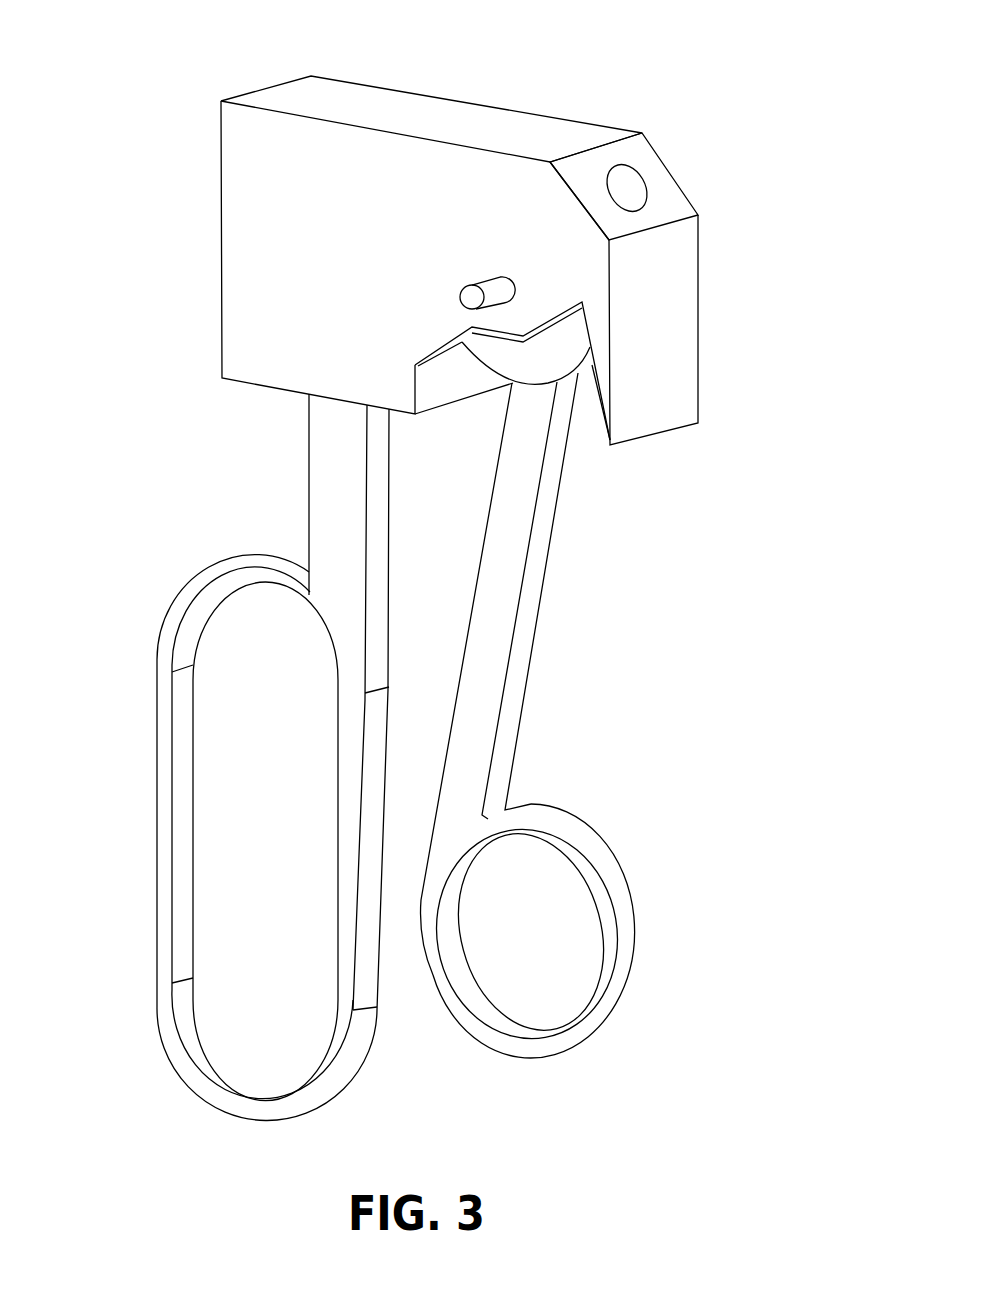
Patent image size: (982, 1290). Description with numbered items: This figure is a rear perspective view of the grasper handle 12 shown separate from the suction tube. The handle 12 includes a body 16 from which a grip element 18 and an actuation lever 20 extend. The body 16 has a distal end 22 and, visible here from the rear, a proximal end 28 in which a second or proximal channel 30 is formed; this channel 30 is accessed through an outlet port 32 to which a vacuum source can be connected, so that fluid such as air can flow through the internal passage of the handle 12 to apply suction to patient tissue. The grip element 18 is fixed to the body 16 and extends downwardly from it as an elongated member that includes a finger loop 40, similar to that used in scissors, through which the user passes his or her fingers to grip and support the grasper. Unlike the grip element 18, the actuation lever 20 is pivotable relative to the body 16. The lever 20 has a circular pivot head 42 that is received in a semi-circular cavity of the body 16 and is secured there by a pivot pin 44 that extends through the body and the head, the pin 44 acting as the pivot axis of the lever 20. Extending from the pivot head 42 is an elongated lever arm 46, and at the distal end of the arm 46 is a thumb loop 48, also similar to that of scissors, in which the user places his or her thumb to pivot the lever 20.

The handle 12 is at (766, 66).
The body 16 is at (435, 110).
The grip element 18 is at (99, 899).
The actuation lever 20 is at (588, 609).
The distal end 22 is at (185, 216).
The proximal end 28 is at (742, 364).
The proximal channel 30 is at (632, 193).
The outlet port 32 is at (656, 170).
The finger loop 40 is at (192, 1065).
The pivot head 42 is at (505, 362).
The pivot pin 44 is at (495, 280).
The lever arm 46 is at (513, 695).
The thumb loop 48 is at (620, 975).